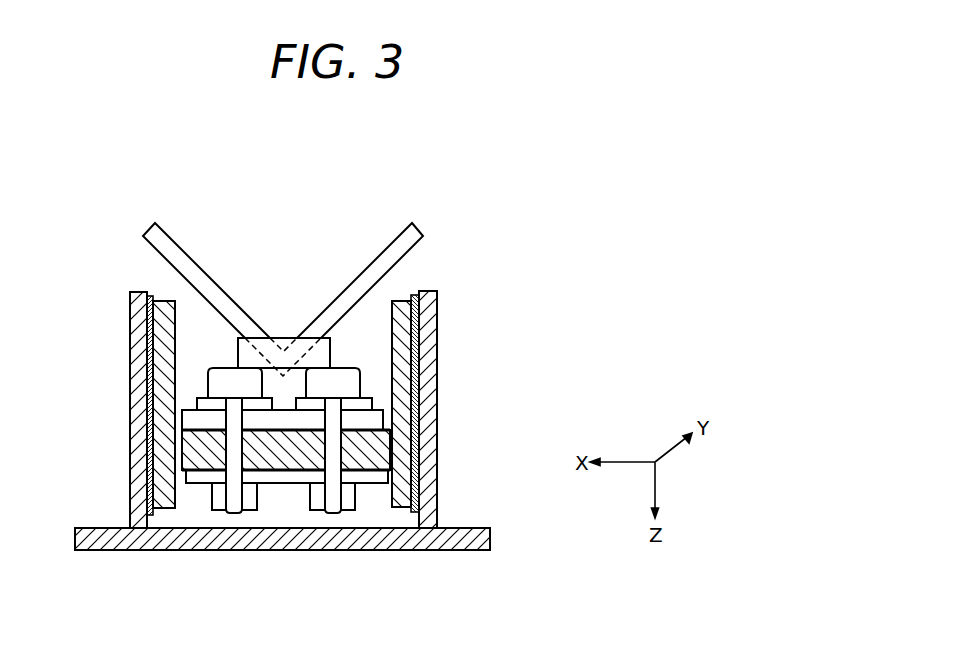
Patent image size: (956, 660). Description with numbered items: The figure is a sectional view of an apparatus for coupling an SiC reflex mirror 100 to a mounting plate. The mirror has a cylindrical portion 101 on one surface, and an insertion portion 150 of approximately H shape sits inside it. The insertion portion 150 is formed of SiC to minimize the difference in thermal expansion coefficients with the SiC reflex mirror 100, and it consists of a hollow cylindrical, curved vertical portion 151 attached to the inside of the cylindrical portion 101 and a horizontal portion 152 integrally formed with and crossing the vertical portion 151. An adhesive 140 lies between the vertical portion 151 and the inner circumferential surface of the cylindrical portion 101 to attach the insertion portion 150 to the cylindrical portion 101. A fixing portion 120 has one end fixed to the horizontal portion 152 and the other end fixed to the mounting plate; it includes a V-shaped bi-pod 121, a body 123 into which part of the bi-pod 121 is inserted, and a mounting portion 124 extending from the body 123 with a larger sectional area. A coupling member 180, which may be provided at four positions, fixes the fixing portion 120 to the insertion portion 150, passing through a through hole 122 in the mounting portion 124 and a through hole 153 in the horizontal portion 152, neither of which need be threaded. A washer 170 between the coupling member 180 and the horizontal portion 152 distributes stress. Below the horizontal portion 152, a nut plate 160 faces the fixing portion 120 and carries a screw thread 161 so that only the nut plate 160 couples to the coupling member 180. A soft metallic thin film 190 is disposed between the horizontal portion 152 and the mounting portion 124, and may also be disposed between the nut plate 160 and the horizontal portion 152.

The SiC reflex mirror 100 is at (485, 538).
The cylindrical portion 101 is at (428, 453).
The fixing portion 120 is at (281, 267).
The bi-pod 121 is at (195, 272).
The through hole 122 is at (227, 418).
The body 123 is at (247, 355).
The mounting portion 124 is at (378, 422).
The adhesive 140 is at (415, 352).
The insertion portion 150 is at (403, 323).
The vertical portion 151 is at (165, 382).
The horizontal portion 152 is at (283, 455).
The through hole 153 is at (331, 462).
The nut plate 160 is at (203, 478).
The screw thread 161 is at (230, 502).
The washer 170 is at (367, 403).
The coupling member 180 is at (347, 388).
The soft metallic thin film 190 is at (233, 522).